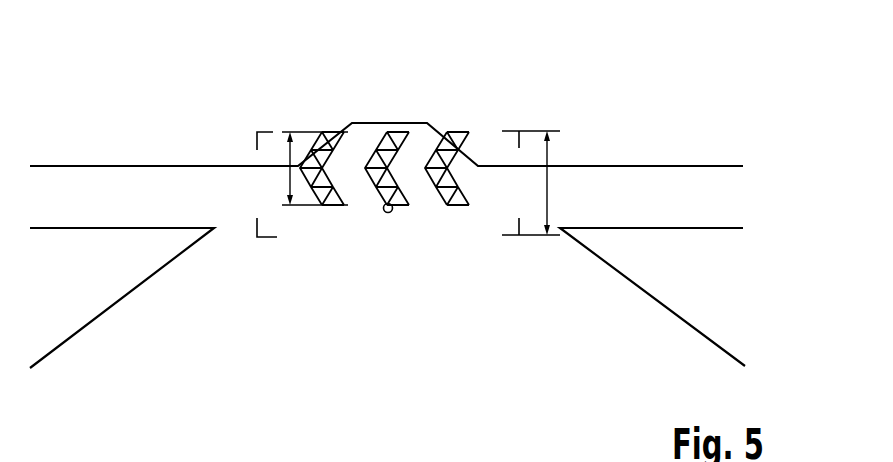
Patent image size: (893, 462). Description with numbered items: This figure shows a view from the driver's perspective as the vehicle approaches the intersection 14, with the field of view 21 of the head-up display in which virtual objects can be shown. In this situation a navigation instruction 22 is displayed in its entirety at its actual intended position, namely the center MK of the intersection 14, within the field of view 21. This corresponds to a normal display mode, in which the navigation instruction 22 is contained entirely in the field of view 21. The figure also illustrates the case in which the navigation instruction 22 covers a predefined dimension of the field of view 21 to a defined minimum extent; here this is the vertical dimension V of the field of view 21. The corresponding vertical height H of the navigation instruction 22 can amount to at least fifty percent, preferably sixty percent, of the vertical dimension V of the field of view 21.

The intersection 14 is at (486, 126).
The field of view 21 is at (267, 239).
The navigation instruction 22 is at (402, 123).
The center of the intersection MK is at (389, 213).
The vertical height of the navigation instruction H is at (288, 174).
The vertical dimension of the field of view V is at (548, 156).